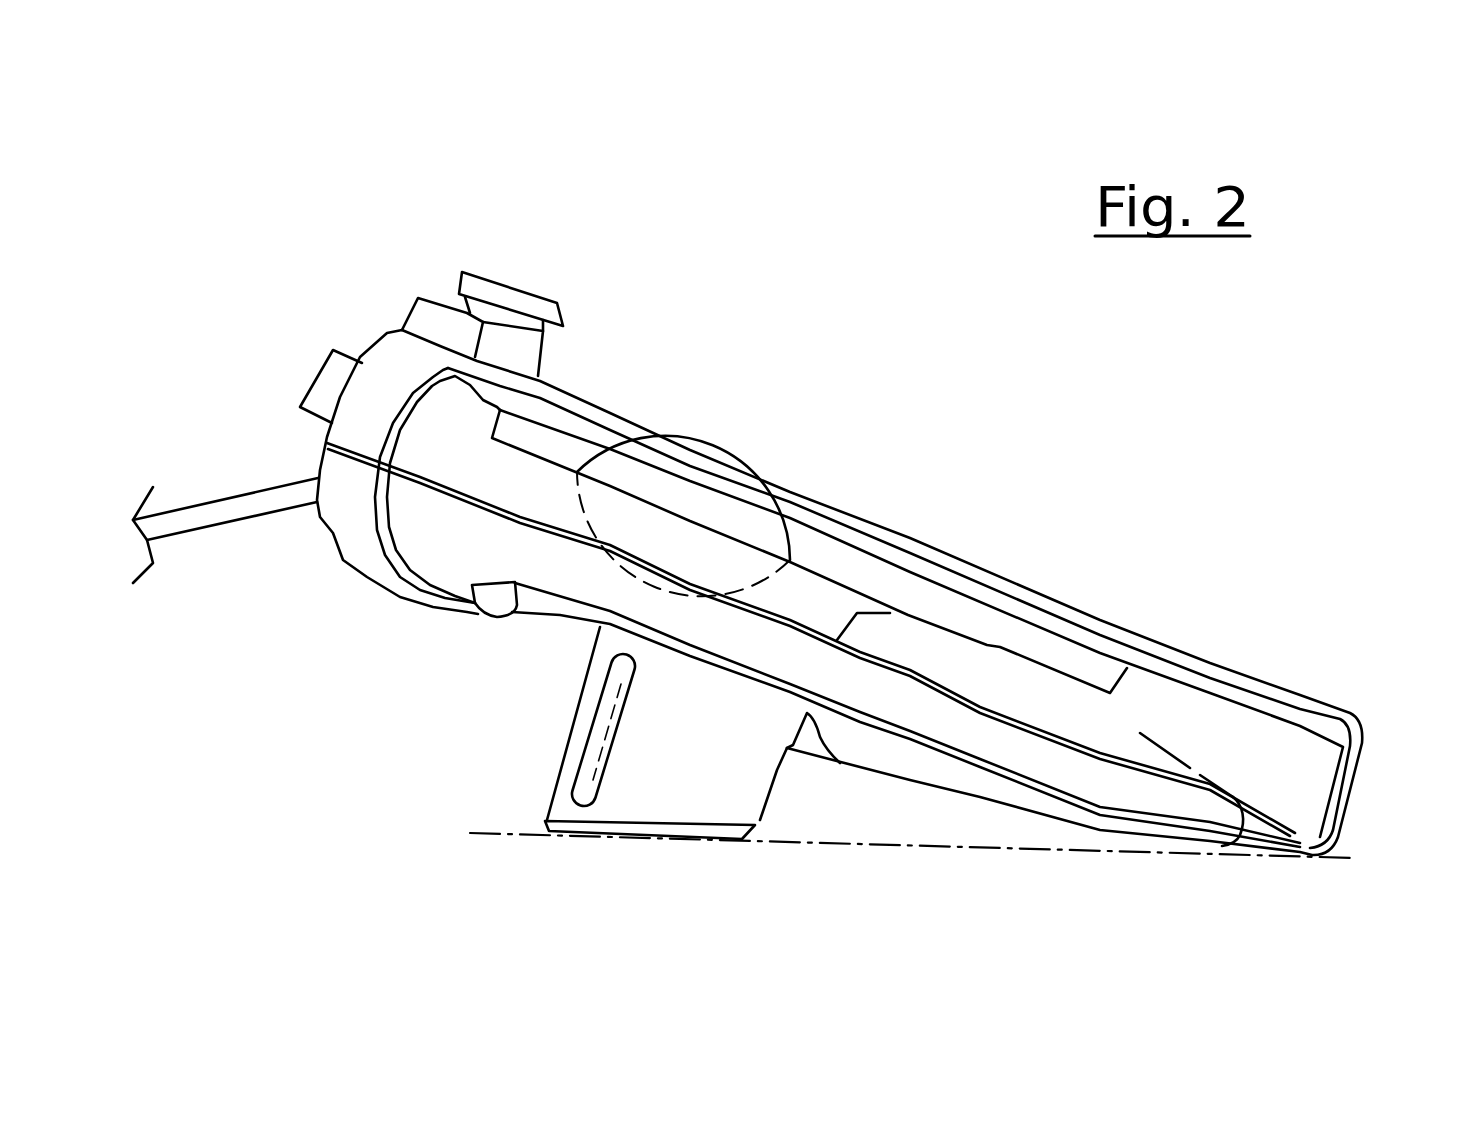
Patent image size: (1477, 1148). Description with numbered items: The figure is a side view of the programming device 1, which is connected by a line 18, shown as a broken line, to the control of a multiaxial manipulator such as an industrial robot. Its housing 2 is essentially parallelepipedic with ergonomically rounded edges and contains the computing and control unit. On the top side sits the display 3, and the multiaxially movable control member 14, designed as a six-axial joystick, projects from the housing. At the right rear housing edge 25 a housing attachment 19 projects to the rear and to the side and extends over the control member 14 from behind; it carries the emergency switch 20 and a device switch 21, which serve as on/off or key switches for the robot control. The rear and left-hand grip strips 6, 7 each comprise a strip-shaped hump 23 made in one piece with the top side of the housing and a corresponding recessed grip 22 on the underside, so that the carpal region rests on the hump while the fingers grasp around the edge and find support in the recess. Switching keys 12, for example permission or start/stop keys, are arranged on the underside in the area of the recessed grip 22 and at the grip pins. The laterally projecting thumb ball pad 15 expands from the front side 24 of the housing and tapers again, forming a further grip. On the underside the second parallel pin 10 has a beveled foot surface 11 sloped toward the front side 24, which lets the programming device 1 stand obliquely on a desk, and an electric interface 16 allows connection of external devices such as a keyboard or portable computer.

The programming device 1 is at (618, 323).
The housing 2 is at (1333, 707).
The display 3 is at (813, 545).
The grip strip 6 is at (372, 527).
The grip strip 7 is at (905, 558).
The second parallel pin 10 is at (583, 692).
The beveled foot surface 11 is at (643, 830).
The switching key 12 is at (482, 600).
The control member 14 is at (707, 437).
The thumb ball pad 15 is at (1123, 727).
The electric interface 16 is at (325, 380).
The line 18 is at (243, 502).
The housing attachment 19 is at (396, 327).
The emergency switch 20 is at (502, 297).
The device switch 21 is at (423, 315).
The recessed grip 22 is at (460, 551).
The hump 23 is at (457, 392).
The front side of the housing 24 is at (1343, 820).
The rear housing edge 25 is at (320, 457).